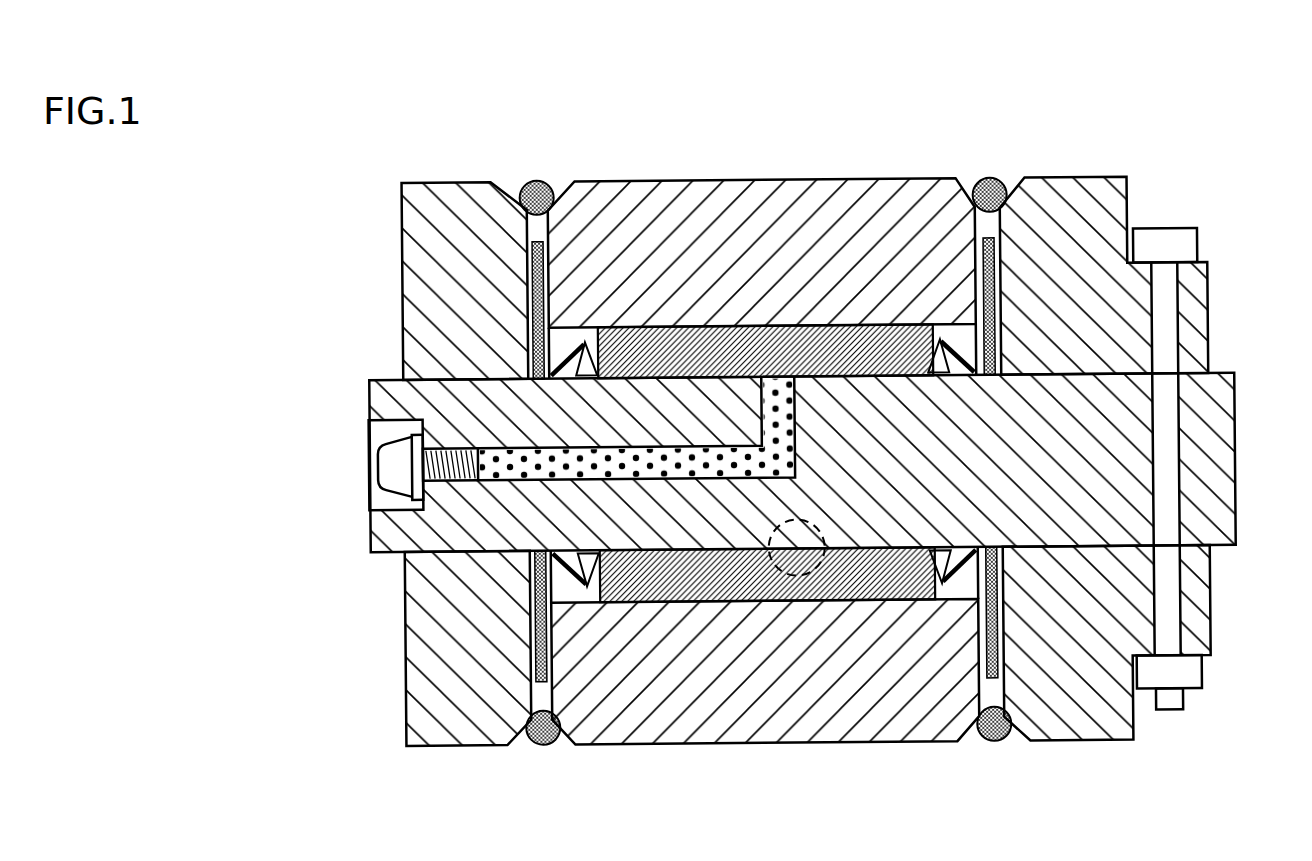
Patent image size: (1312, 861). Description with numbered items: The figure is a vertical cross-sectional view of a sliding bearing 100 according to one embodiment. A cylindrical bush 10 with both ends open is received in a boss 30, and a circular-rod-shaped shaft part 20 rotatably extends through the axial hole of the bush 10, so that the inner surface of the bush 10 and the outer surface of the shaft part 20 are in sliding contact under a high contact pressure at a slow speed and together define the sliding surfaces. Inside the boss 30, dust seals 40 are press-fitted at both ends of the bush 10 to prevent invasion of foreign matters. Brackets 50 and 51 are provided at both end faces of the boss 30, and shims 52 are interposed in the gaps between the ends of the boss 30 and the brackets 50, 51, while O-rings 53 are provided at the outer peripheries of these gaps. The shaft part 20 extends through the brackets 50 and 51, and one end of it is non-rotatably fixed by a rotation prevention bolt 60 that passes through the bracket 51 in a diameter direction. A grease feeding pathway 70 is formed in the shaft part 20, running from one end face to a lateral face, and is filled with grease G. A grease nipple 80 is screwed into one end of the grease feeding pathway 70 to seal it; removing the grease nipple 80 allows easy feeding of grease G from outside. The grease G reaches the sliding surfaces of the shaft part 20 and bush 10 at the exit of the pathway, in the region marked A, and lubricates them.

The sliding bearing 100 is at (325, 328).
The bush 10 is at (700, 347).
The shaft part 20 is at (865, 437).
The boss 30 is at (757, 212).
The dust seal 40 is at (581, 597).
The bracket 50 is at (447, 722).
The bracket 51 is at (1103, 713).
The shim 52 is at (533, 290).
The O-ring 53 is at (535, 182).
The rotation prevention bolt 60 is at (1178, 248).
The grease feeding pathway 70 is at (537, 480).
The grease nipple 80 is at (392, 462).
The grease G is at (652, 463).
The region A is at (798, 580).